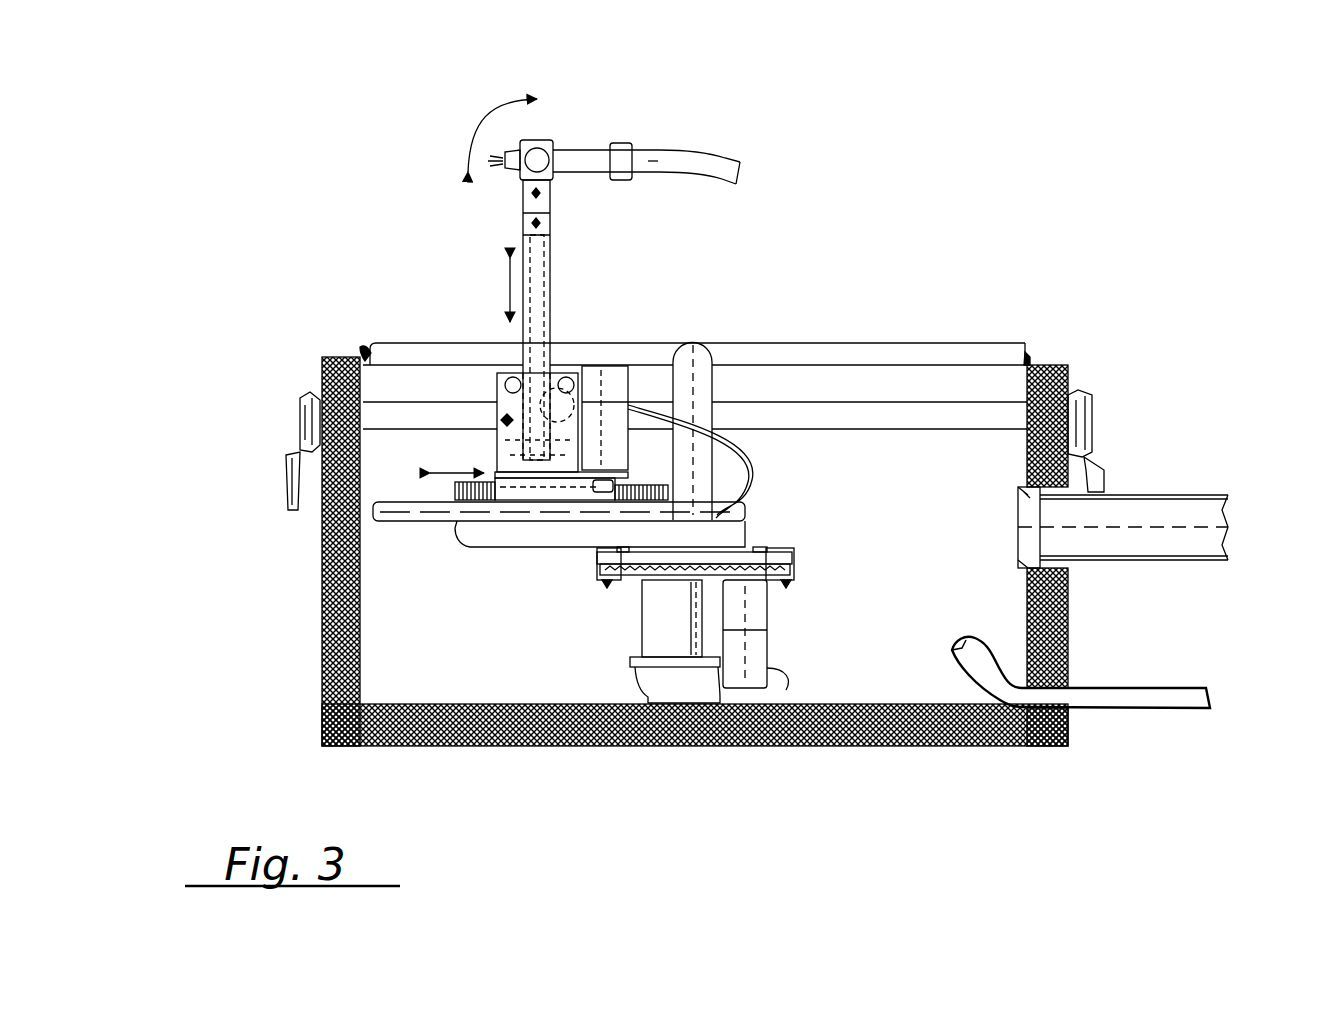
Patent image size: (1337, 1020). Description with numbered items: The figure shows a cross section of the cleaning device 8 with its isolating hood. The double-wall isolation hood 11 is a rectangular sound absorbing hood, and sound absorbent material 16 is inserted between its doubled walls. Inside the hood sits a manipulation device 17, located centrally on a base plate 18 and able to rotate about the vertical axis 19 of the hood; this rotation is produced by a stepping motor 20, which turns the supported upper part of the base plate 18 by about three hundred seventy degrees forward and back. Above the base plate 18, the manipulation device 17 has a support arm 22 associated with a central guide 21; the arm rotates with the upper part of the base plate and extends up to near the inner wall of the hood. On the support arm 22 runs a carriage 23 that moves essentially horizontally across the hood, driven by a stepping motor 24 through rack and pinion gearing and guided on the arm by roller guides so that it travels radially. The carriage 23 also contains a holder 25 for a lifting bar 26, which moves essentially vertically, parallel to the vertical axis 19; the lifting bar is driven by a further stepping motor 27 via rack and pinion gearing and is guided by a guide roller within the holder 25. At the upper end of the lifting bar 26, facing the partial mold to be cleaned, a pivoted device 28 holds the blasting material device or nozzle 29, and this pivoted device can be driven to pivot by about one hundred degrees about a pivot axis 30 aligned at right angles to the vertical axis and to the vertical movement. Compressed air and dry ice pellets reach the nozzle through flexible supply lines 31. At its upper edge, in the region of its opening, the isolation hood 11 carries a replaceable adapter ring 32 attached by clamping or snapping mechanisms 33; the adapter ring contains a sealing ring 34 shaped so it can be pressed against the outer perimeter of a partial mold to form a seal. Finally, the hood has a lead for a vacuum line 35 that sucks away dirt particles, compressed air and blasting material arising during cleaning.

The cleaning apparatus 8 is at (1107, 261).
The isolation hood 11 is at (318, 637).
The sound absorbent material 16 is at (342, 704).
The manipulation device 17 is at (573, 633).
The base plate 18 is at (668, 582).
The vertical axis 19 is at (697, 377).
The stepping motor 20 is at (736, 668).
The central guide 21 is at (728, 392).
The support arm 22 is at (492, 528).
The carriage 23 is at (510, 487).
The stepping motor 24 is at (615, 388).
The holder 25 is at (507, 437).
The lifting bar 26 is at (533, 225).
The stepping motor 27 is at (595, 375).
The pivoted device 28 is at (550, 136).
The blasting material device/nozzle 29 is at (505, 143).
The pivot axis 30 is at (539, 160).
The flexible supply lines 31 is at (1160, 643).
The adapter ring 32 is at (1070, 370).
The clamping or snapping mechanisms 33 is at (290, 432).
The sealing ring 34 is at (1032, 356).
The vacuum line 35 is at (1140, 515).